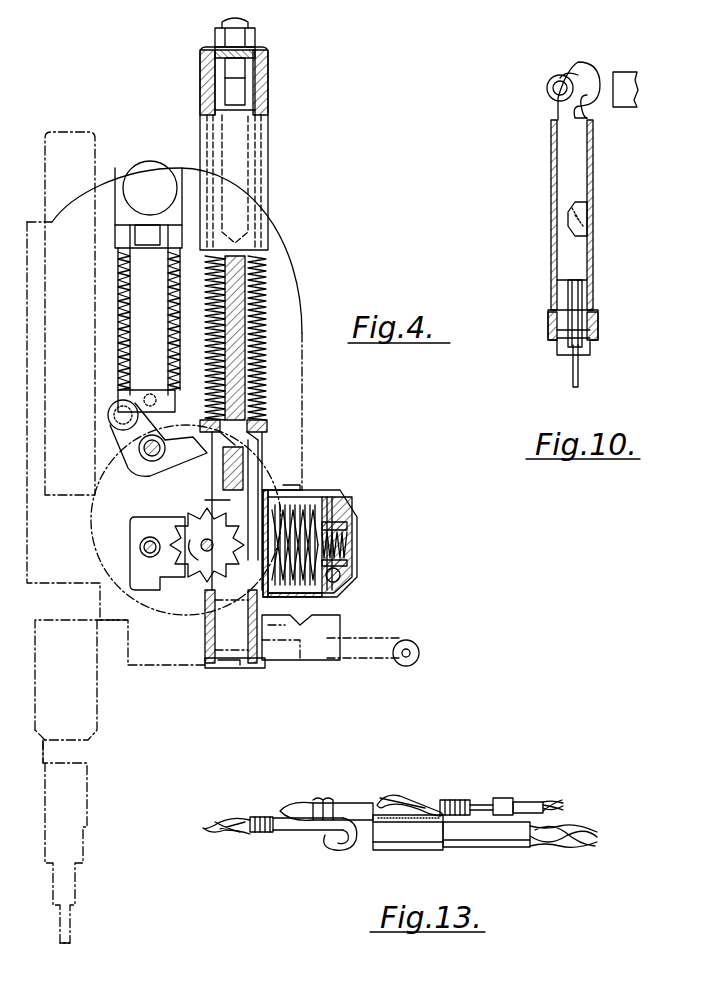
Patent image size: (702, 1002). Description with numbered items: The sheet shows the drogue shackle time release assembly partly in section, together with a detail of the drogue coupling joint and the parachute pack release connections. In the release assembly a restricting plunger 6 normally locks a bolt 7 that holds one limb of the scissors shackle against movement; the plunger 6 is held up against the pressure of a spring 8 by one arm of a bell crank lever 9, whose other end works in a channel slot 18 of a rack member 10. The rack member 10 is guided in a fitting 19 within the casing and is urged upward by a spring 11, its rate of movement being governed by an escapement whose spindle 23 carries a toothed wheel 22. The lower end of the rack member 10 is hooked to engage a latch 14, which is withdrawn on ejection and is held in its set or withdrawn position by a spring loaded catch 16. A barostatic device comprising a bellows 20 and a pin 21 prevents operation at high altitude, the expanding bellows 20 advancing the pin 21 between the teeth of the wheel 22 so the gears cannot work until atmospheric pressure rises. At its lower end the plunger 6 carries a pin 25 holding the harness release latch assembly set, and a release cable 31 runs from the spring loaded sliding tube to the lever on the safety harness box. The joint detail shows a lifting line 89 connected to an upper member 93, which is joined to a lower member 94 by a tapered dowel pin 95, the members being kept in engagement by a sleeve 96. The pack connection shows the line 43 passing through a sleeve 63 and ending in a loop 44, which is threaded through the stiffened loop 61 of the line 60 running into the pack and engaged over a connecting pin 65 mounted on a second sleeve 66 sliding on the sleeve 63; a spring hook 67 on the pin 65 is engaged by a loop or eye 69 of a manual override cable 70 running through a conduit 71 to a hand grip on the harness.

In FIG. 4, the restricting plunger 6 is at (152, 291).
In FIG. 4, the bolt 7 is at (150, 165).
In FIG. 4, the spring 8 is at (118, 318).
In FIG. 4, the bell crank lever 9 is at (130, 440).
In FIG. 4, the rack member 10 is at (233, 345).
In FIG. 4, the spring 11 is at (258, 270).
In FIG. 4, the latch 14 is at (372, 636).
In FIG. 4, the spring loaded catch 16 is at (298, 625).
In FIG. 4, the channel slot 18 is at (252, 305).
In FIG. 4, the fitting 19 is at (253, 453).
In FIG. 4, the bellows 20 is at (307, 523).
In FIG. 4, the pin 21 is at (255, 570).
In FIG. 4, the toothed wheel 22 is at (193, 593).
In FIG. 4, the spindle 23 is at (200, 543).
In FIG. 4, the pin 25 is at (150, 394).
In FIG. 4, the release cable 31 is at (67, 920).
In FIG. 13, the line or cable 43 is at (547, 848).
In FIG. 13, the loop 44 is at (323, 842).
In FIG. 13, the line 60 is at (255, 815).
In FIG. 13, the stiffened loop 61 is at (283, 831).
In FIG. 13, the sleeve 63 is at (473, 838).
In FIG. 13, the connecting pin 65 is at (352, 805).
In FIG. 13, the second sleeve 66 is at (403, 846).
In FIG. 13, the spring hook 67 is at (407, 799).
In FIG. 13, the loop or eye 69 is at (443, 801).
In FIG. 13, the manual override cable 70 is at (551, 800).
In FIG. 13, the conduit 71 is at (522, 799).
In FIG. 10, the lifting line 89 is at (626, 106).
In FIG. 10, the upper member 93 is at (566, 150).
In FIG. 10, the lower member 94 is at (578, 255).
In FIG. 10, the tapered dowel pin 95 is at (592, 216).
In FIG. 10, the sleeve 96 is at (553, 192).